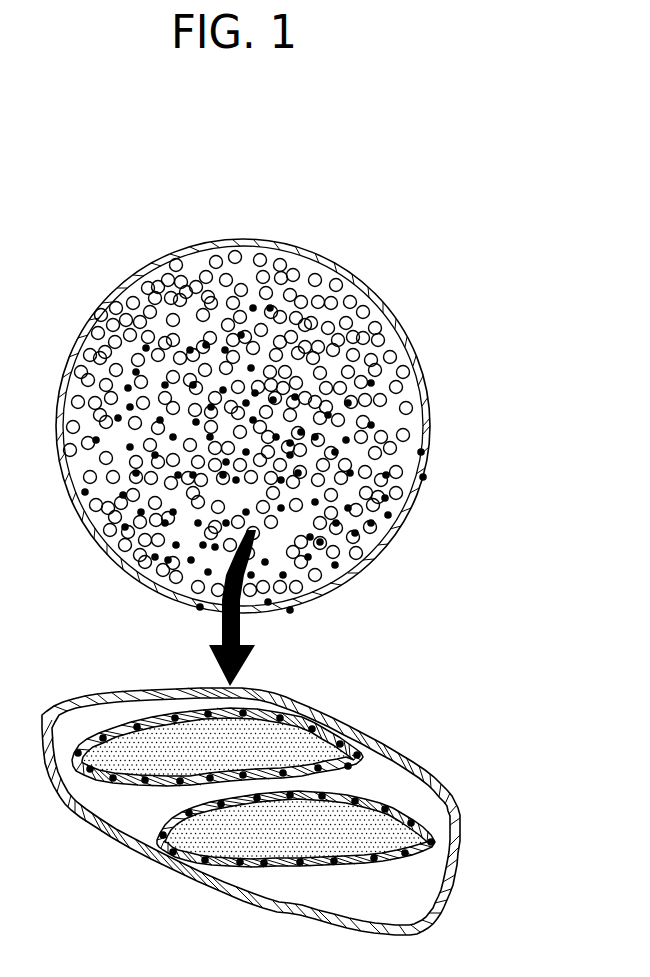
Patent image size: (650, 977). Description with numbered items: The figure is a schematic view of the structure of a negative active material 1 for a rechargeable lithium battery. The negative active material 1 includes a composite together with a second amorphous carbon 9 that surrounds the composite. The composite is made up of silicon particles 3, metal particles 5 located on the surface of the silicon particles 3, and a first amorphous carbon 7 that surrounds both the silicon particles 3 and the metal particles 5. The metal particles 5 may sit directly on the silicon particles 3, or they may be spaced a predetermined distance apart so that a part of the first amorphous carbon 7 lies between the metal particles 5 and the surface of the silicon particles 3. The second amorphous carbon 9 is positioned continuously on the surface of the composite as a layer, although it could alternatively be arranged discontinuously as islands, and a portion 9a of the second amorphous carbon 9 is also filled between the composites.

The negative active material 1 is at (259, 162).
The silicon particles 3 is at (421, 452).
The metal particles 5 is at (434, 842).
The first amorphous carbon 7 is at (127, 723).
The second amorphous carbon 9 is at (371, 284).
The portion of the second amorphous carbon 9a is at (120, 813).